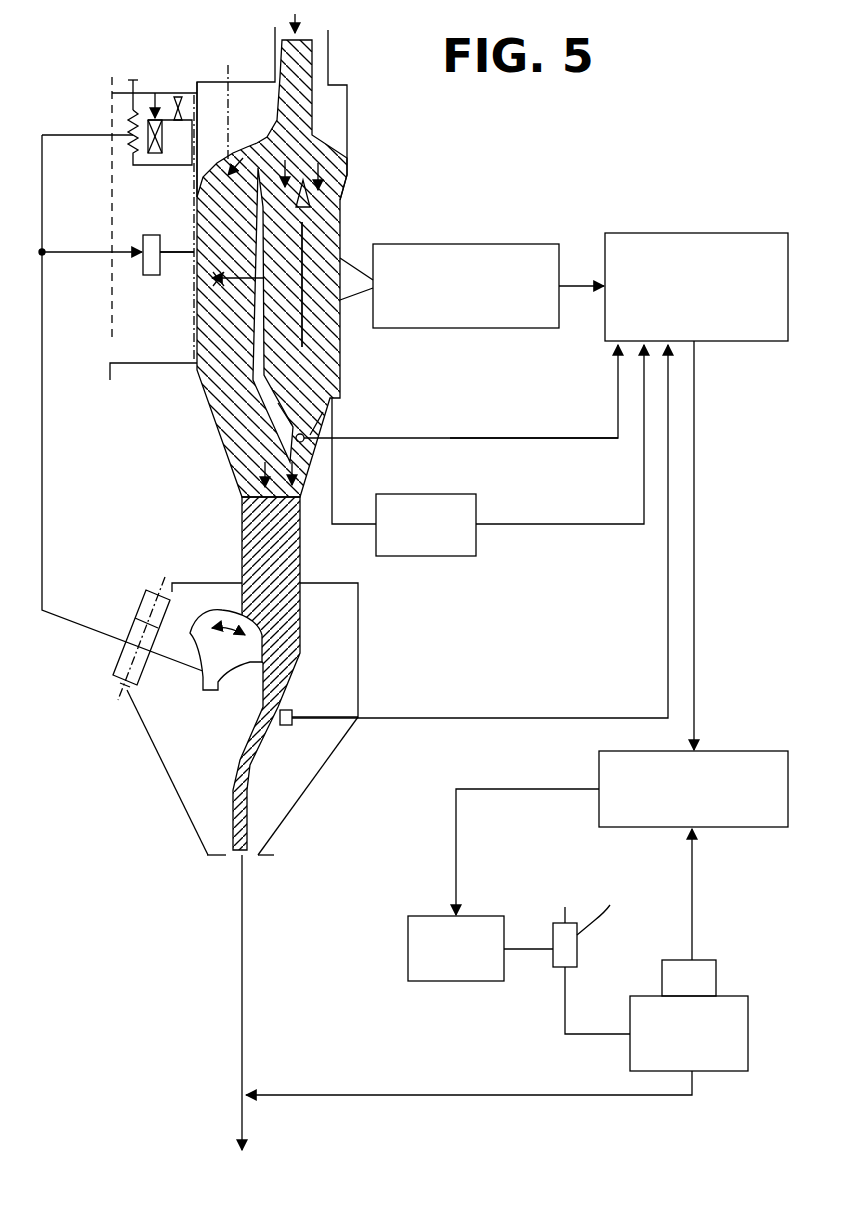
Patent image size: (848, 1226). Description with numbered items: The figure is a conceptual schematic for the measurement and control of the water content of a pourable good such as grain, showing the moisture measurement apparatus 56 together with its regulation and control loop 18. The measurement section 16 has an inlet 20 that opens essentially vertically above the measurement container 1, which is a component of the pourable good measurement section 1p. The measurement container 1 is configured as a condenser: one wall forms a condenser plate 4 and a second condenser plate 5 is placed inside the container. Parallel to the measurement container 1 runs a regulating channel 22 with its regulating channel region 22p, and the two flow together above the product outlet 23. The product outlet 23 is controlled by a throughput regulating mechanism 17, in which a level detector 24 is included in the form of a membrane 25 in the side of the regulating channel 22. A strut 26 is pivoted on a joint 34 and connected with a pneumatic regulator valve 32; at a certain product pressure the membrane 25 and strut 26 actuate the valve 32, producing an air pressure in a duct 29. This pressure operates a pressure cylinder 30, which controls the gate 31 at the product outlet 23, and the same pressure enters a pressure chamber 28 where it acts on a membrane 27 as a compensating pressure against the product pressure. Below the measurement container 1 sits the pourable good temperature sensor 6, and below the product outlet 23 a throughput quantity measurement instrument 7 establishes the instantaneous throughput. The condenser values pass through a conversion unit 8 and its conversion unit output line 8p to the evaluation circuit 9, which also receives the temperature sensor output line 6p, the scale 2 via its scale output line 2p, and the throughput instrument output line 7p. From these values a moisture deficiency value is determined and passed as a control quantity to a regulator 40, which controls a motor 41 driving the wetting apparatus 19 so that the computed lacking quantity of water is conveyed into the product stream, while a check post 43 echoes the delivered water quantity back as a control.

The measurement container 1 is at (345, 362).
The pourable good measurement section 1p is at (316, 332).
The scale 2 is at (395, 494).
The scale output line 2p is at (522, 524).
The condenser plate 4 is at (340, 192).
The second condenser plate 5 is at (302, 232).
The pourable good temperature sensor 6 is at (305, 448).
The temperature sensor output line 6p is at (528, 438).
The throughput quantity measurement instrument 7 is at (283, 727).
The throughput instrument output line 7p is at (460, 718).
The conversion unit 8 is at (440, 244).
The conversion unit output line 8p is at (573, 286).
The evaluation circuit 9 is at (685, 233).
The measurement section 16 is at (349, 101).
The throughput regulating mechanism 17 is at (180, 582).
The regulation and control loop 18 is at (643, 545).
The wetting apparatus 19 is at (577, 951).
The inlet 20 is at (318, 47).
The regulating channel 22 is at (228, 67).
The regulating channel region 22p is at (236, 139).
The product outlet 23 is at (242, 545).
The level detector 24 is at (157, 216).
The membrane 25 is at (193, 364).
The strut 26 is at (194, 343).
The membrane 27 is at (152, 262).
The pressure chamber 28 is at (148, 240).
The duct 29 is at (42, 445).
The pressure cylinder 30 is at (113, 680).
The gate 31 is at (205, 691).
The pneumatic regulator valve 32 is at (150, 155).
The joint 34 is at (183, 98).
The regulator 40 is at (730, 751).
The motor 41 is at (408, 948).
The check post 43 is at (716, 988).
The moisture measurement apparatus 56 is at (242, 670).